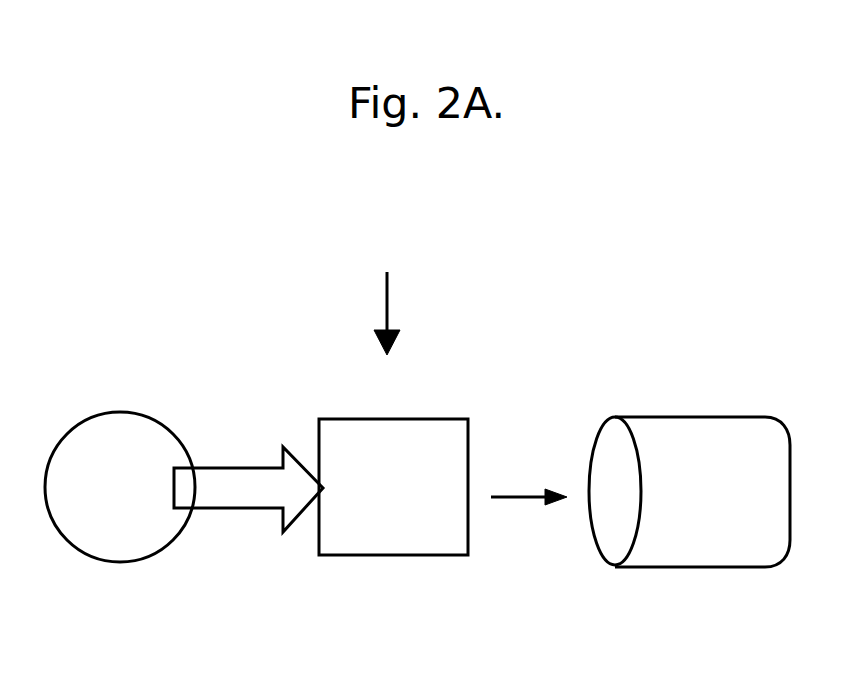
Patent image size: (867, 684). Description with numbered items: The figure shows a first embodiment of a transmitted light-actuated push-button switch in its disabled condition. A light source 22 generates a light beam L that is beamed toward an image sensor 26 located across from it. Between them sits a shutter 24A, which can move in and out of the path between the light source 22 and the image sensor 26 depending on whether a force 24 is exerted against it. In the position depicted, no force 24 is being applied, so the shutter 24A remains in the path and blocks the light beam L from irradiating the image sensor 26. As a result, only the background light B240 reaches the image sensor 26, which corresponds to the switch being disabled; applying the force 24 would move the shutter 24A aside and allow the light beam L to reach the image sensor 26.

The light source 22 is at (141, 501).
The light beam L is at (235, 487).
The force 24 is at (384, 290).
The shutter 24A is at (433, 506).
The background light B240 is at (522, 492).
The image sensor 26 is at (716, 504).